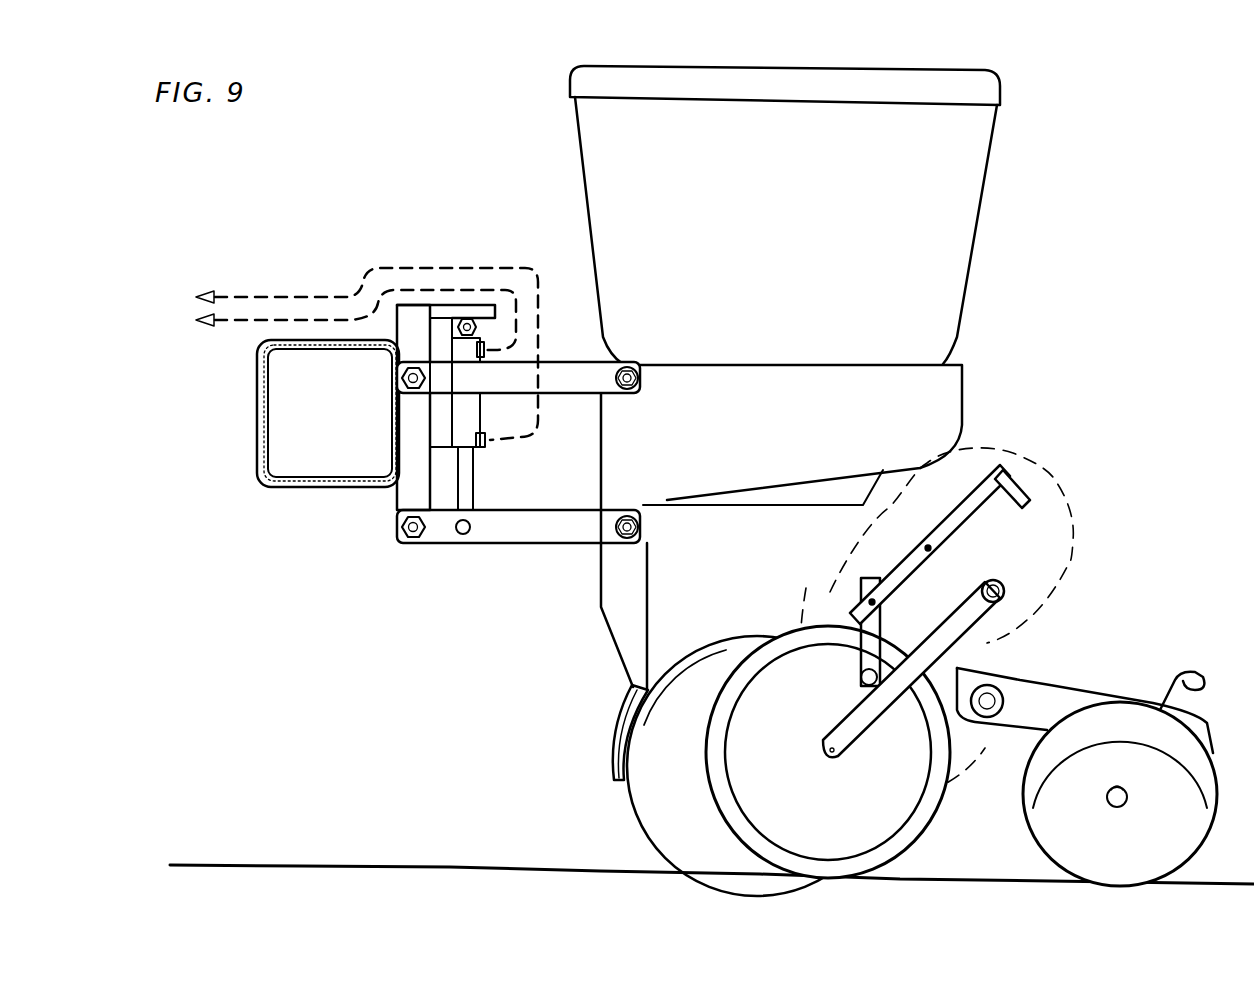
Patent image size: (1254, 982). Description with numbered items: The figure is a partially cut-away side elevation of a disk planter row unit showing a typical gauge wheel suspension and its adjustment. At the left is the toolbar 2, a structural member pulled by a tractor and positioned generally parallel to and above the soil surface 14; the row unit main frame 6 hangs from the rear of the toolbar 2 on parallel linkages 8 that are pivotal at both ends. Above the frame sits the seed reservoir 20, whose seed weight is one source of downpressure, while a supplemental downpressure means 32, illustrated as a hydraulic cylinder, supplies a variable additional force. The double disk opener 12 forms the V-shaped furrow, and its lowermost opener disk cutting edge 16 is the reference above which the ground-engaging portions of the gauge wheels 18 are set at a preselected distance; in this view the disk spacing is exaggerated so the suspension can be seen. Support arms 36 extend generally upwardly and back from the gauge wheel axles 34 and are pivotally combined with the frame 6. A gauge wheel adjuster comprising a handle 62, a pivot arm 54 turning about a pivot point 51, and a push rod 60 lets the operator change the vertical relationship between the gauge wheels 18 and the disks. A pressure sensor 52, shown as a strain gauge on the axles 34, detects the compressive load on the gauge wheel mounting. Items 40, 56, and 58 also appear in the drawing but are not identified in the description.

The toolbar 2 is at (333, 478).
The row unit main frame 6 is at (968, 465).
The parallel linkages 8 is at (573, 400).
The double disk opener 12 is at (620, 805).
The soil surface 14 is at (466, 862).
The opener disk cutting edge 16 is at (665, 869).
The gauge wheels 18 is at (927, 841).
The seed reservoir 20 is at (982, 264).
The supplemental downpressure means 32 is at (485, 452).
The gauge wheel axles 34 is at (848, 762).
The support arms 36 is at (953, 661).
The hydraulic hoses 40 is at (476, 266).
The pivot point 51 is at (935, 560).
The pressure sensor 52 is at (855, 748).
The pivot arm 54 is at (975, 532).
The pivot pin 56 is at (1010, 590).
The support bracket 58 is at (855, 613).
The push rod 60 is at (856, 660).
The handle 62 is at (1040, 492).